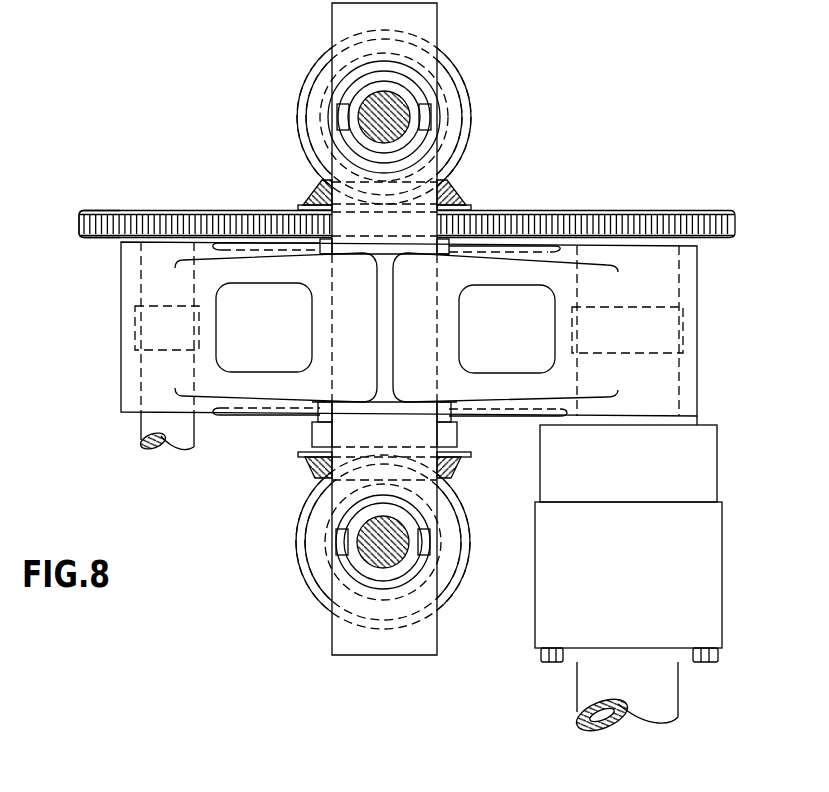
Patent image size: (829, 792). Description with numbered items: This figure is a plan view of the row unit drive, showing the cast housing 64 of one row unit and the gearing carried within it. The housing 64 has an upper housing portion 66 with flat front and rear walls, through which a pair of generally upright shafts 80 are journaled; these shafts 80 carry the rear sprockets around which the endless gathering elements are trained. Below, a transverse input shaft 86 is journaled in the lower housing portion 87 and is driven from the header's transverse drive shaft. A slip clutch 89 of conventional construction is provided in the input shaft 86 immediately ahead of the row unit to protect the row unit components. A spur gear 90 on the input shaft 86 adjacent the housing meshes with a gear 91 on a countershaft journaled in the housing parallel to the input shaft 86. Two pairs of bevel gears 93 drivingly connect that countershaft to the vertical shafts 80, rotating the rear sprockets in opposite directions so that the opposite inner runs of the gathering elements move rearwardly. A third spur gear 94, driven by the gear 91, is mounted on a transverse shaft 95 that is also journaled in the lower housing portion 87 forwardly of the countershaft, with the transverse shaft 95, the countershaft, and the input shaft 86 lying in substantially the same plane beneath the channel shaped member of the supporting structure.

The cast housing 64 is at (278, 390).
The upper housing portion 66 is at (437, 507).
The upright shaft 80 is at (410, 118).
The transverse input shaft 86 is at (648, 717).
The lower housing portion 87 is at (690, 388).
The slip clutch 89 is at (707, 580).
The spur gear 90 is at (617, 216).
The gear 91 is at (493, 218).
The bevel gears 93 is at (315, 180).
The third spur gear 94 is at (117, 215).
The transverse shaft 95 is at (177, 438).